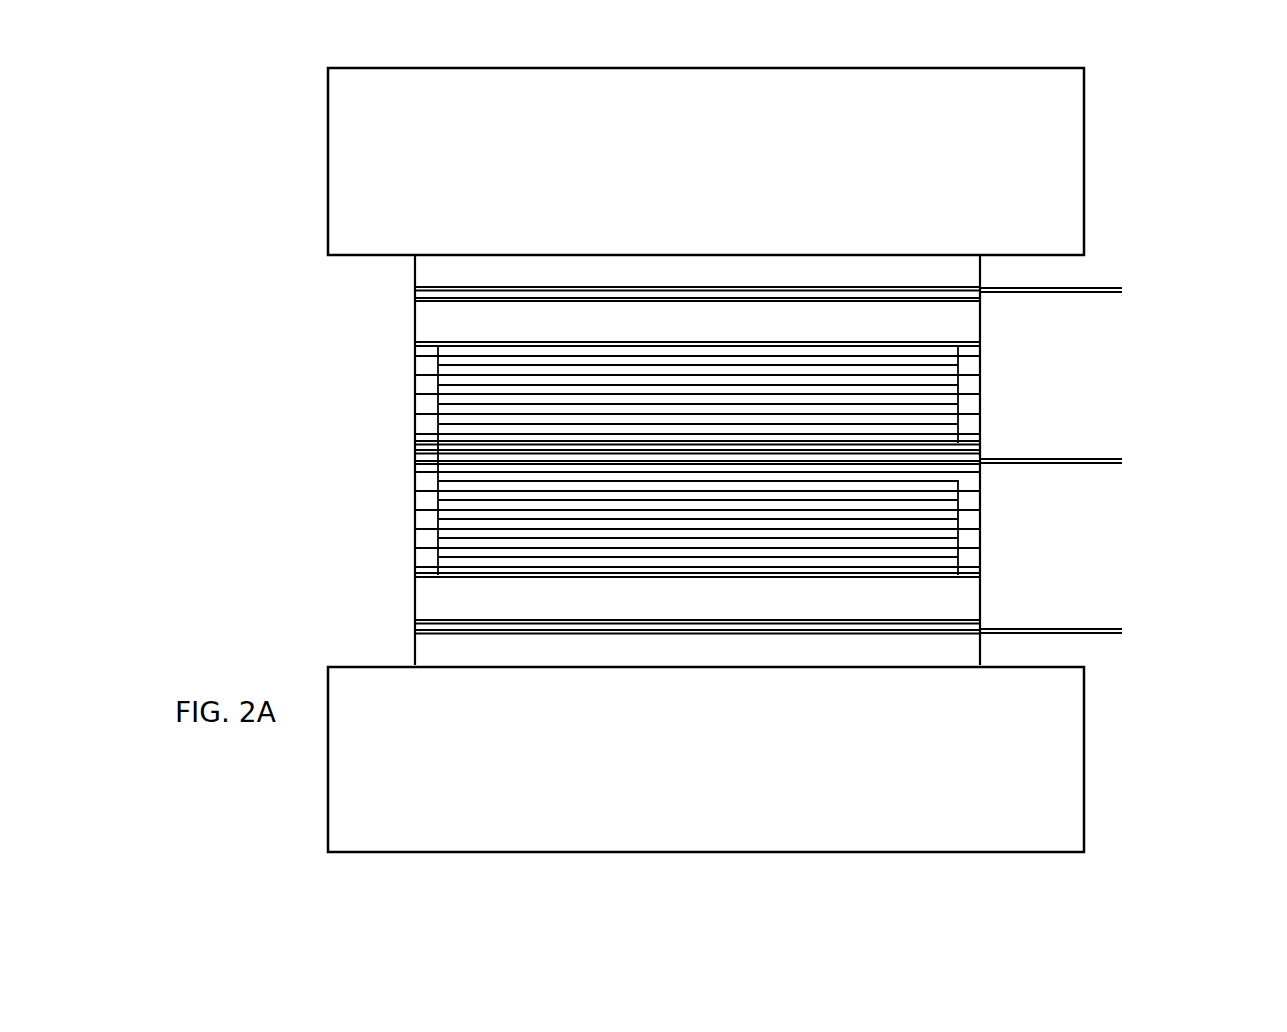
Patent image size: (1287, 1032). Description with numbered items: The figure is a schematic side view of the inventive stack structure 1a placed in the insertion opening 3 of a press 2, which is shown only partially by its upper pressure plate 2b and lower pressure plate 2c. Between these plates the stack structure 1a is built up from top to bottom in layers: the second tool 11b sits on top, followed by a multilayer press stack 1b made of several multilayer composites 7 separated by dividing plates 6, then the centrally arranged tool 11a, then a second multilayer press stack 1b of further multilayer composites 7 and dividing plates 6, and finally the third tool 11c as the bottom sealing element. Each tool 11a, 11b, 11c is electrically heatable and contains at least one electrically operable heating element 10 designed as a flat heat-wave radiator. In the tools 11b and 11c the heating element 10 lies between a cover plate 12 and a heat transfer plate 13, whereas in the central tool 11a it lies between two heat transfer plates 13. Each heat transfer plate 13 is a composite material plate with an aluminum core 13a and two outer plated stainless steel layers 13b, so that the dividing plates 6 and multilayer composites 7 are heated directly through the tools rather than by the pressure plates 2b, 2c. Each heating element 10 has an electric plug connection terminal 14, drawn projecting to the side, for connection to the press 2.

The press 2 is at (1128, 104).
The upper pressure plate 2b is at (706, 161).
The lower pressure plate 2c is at (706, 759).
The insertion opening 3 is at (314, 498).
The stack structure 1a is at (332, 255).
The multilayer press stack 1b is at (410, 478).
The tool 11a is at (410, 447).
The second tool 11b is at (410, 258).
The third tool 11c is at (410, 577).
The dividing plate 6 is at (972, 385).
The multilayer composite 7 is at (947, 410).
The heating element 10 is at (963, 290).
The cover plate 12 is at (963, 270).
The heat transfer plate 13 is at (767, 498).
The aluminum core 13a is at (963, 320).
The stainless steel layer 13b is at (972, 299).
The electric plug connection terminal 14 is at (1122, 290).